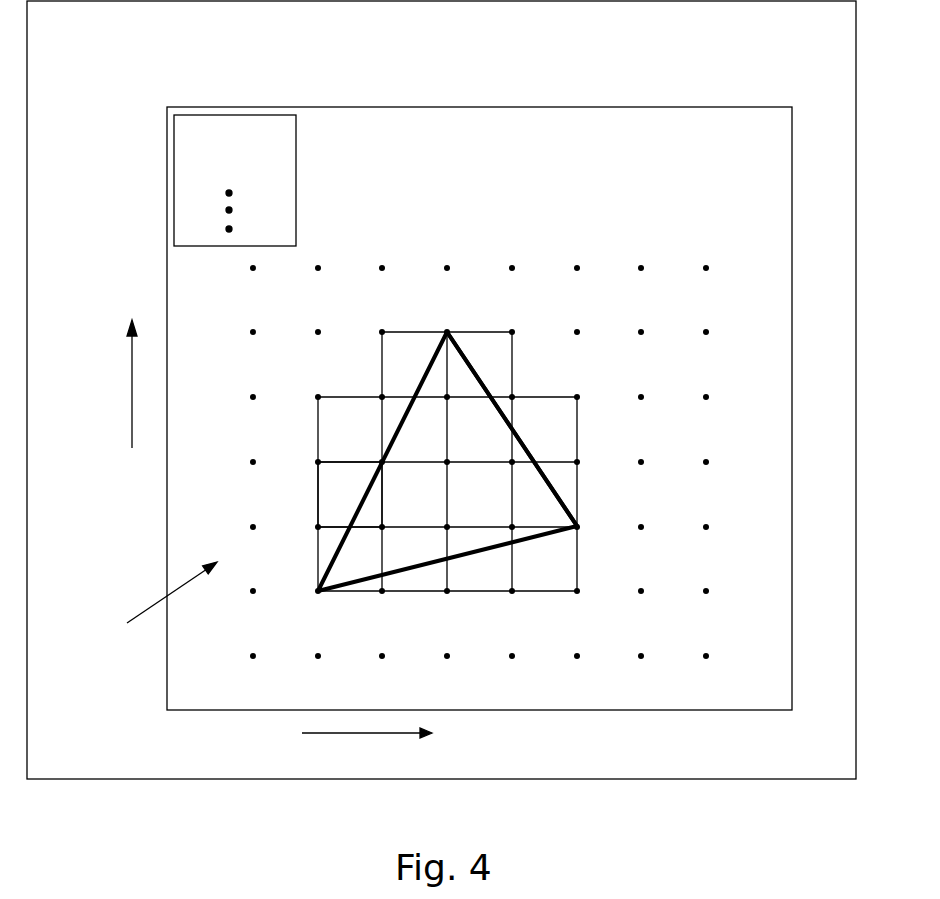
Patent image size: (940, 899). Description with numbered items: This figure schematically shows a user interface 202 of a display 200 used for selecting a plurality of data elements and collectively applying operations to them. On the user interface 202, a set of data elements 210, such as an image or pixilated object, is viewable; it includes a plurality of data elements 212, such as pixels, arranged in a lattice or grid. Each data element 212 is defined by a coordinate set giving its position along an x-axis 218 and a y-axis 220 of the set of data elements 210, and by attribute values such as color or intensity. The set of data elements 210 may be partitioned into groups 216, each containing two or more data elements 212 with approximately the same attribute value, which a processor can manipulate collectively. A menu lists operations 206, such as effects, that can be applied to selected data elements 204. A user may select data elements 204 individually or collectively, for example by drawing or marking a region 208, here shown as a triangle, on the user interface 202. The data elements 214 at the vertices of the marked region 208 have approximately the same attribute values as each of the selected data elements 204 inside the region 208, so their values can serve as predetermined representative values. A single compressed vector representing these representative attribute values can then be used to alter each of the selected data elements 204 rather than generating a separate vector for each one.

The display 200 is at (819, 40).
The user interface 202 is at (278, 106).
The selected data elements 204 is at (395, 500).
The operations 206 is at (296, 210).
The marked region 208 is at (497, 392).
The set of data elements 210 is at (157, 601).
The data elements 212 is at (682, 262).
The data elements at the vertices 214 is at (447, 332).
The groups 216 is at (418, 332).
The x-axis 218 is at (330, 733).
The y-axis 220 is at (132, 392).